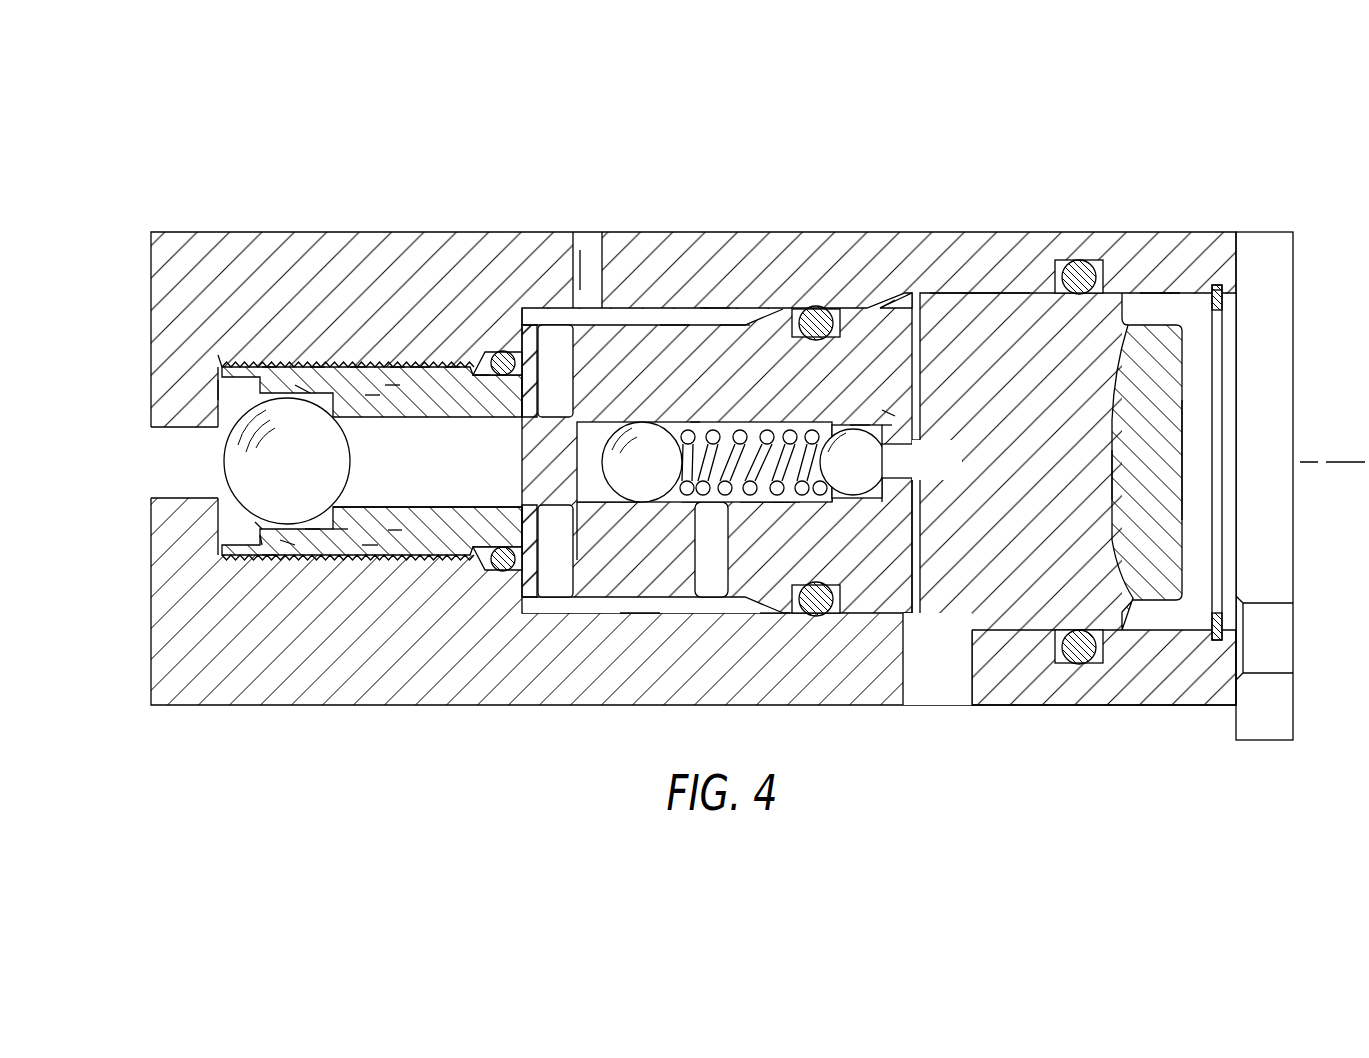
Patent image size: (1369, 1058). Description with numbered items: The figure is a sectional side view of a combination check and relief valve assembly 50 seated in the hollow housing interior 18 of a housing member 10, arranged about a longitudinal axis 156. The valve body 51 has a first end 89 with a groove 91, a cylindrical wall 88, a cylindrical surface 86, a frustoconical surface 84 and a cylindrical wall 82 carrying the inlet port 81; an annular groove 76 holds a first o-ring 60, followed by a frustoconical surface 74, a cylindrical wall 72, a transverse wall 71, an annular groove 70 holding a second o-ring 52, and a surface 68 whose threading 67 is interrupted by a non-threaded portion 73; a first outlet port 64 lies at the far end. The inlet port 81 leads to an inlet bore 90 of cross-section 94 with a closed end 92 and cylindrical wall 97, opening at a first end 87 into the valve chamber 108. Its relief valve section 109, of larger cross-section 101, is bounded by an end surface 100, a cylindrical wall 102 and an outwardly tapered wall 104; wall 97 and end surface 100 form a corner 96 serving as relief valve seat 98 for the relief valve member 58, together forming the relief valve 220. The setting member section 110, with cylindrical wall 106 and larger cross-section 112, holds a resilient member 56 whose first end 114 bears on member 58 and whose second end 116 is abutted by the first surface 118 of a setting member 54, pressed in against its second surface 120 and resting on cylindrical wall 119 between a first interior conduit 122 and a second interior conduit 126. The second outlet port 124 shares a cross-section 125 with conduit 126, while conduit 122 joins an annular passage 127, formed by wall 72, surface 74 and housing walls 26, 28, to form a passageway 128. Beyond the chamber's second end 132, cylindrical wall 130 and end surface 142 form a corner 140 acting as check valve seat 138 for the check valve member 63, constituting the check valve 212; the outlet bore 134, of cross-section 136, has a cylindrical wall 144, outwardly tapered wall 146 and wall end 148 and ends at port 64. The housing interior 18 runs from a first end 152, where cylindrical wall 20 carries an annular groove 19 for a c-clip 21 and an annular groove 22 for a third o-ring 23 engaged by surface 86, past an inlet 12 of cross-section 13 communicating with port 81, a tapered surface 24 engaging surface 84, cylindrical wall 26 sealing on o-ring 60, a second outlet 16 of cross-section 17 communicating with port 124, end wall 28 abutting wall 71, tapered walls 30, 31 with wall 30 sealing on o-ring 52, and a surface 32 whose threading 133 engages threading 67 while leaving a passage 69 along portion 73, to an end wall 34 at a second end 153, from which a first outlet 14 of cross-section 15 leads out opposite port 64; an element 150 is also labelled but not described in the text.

The housing member 10 is at (368, 130).
The inlet 12 is at (948, 692).
The cross-section 13 is at (903, 745).
The first outlet 14 is at (160, 468).
The cross-section 15 is at (83, 427).
The second outlet 16 is at (578, 250).
The cross-section 17 is at (602, 192).
The housing interior 18 is at (715, 310).
The annular groove 19 is at (1224, 274).
The cylindrical wall 20 is at (1160, 292).
The c-clip 21 is at (1262, 240).
The annular groove 22 is at (1070, 258).
The third o-ring 23 is at (1098, 270).
The tapered surface 24 is at (897, 300).
The cylindrical wall 26 is at (762, 310).
The end wall 28 is at (518, 330).
The tapered wall 30 is at (474, 355).
The tapered wall 31 is at (453, 363).
The surface 32 is at (397, 366).
The end wall 34 is at (212, 393).
The valve assembly 50 is at (1035, 277).
The valve body 51 is at (985, 257).
The second o-ring 52 is at (503, 366).
The setting member 54 is at (642, 462).
The resilient member 56 is at (753, 453).
The relief valve member 58 is at (853, 462).
The first o-ring 60 is at (808, 320).
The check valve member 63 is at (287, 461).
The first outlet port 64 is at (250, 522).
The threading 67 is at (392, 388).
The surface 68 is at (372, 400).
The passage 69 is at (268, 558).
The annular groove 70 is at (478, 377).
The transverse wall 71 is at (528, 345).
The cylindrical wall 72 is at (658, 340).
The non-threaded portion 73 is at (396, 532).
The frustoconical surface 74 is at (770, 616).
The annular groove 76 is at (833, 608).
The inlet port 81 is at (904, 624).
The cylindrical wall 82 is at (880, 304).
The frustoconical surface 84 is at (945, 297).
The cylindrical surface 86 is at (1020, 297).
The first end 87 is at (891, 412).
The cylindrical wall 88 is at (1150, 602).
The first end 89 is at (1185, 455).
The inlet bore 90 is at (960, 483).
The groove 91 is at (1130, 490).
The closed end 92 is at (958, 466).
The cross-section 94 is at (985, 447).
The corner 96 is at (916, 500).
The cylindrical wall 97 is at (917, 440).
The relief valve seat 98 is at (887, 423).
The end surface 100 is at (890, 503).
The cross-section 101 is at (1050, 427).
The cylindrical wall 102 is at (880, 499).
The outwardly tapered wall 104 is at (837, 500).
The cylindrical wall 106 is at (783, 508).
The valve chamber 108 is at (735, 326).
The relief valve section 109 is at (860, 423).
The setting member section 110 is at (763, 505).
The cross-section 112 is at (455, 422).
The first end 114 is at (810, 427).
The second end 116 is at (688, 423).
The first surface 118 is at (682, 500).
The cylindrical wall 119 is at (623, 523).
The second surface 120 is at (606, 504).
The first interior conduit 122 is at (712, 575).
The second outlet port 124 is at (543, 326).
The cross-sections 125 is at (570, 538).
The second interior conduit 126 is at (555, 576).
The annular passage 127 is at (668, 318).
The passageway 128 is at (637, 616).
The cylindrical wall 130 is at (388, 510).
The second end 132 is at (330, 368).
The threading 133 is at (318, 367).
The outlet bore 134 is at (303, 387).
The cross-section 136 is at (115, 527).
The check valve seat 138 is at (357, 366).
The corner 140 is at (370, 545).
The end surface 142 is at (340, 535).
The cylindrical wall 144 is at (313, 532).
The outwardly tapered wall 146 is at (288, 545).
The wall end 148 is at (263, 540).
The thread 150 is at (420, 366).
The first end 152 is at (1217, 284).
The second end 153 is at (218, 358).
The longitudinal axis 156 is at (1333, 430).
The check valve 212 is at (268, 362).
The relief valve 220 is at (846, 418).